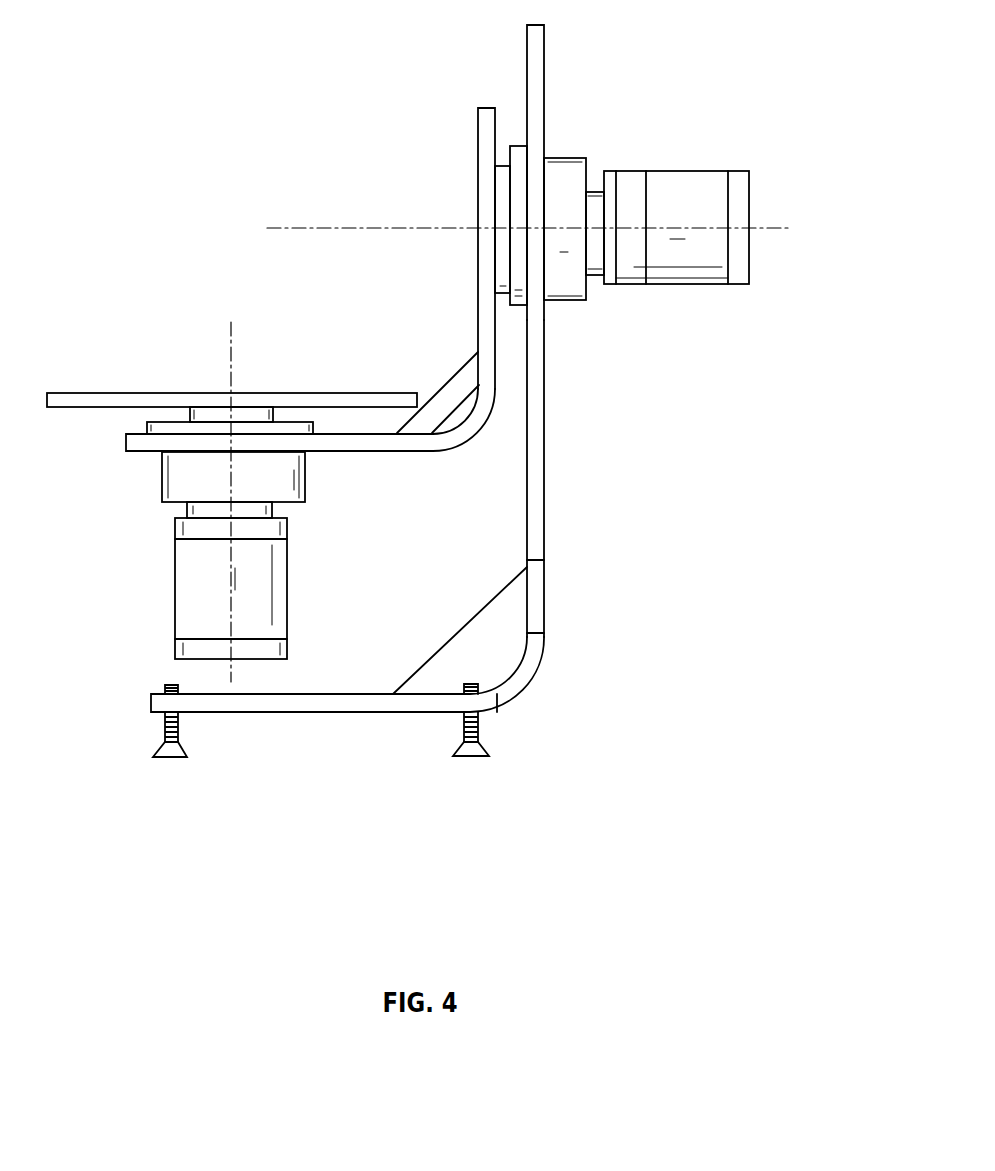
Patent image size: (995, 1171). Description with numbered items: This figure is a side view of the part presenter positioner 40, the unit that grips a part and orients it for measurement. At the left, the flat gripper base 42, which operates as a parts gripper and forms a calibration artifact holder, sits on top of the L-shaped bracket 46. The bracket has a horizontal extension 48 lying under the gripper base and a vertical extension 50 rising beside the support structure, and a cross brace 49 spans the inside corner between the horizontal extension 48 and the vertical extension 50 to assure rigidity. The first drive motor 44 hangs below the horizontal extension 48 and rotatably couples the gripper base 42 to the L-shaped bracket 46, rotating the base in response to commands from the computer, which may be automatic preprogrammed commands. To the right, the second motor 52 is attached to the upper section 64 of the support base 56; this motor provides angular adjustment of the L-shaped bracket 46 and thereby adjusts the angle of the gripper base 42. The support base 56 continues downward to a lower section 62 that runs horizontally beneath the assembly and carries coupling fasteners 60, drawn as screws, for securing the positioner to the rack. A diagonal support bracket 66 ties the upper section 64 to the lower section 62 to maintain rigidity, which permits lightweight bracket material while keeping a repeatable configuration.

The part presenter positioner 40 is at (305, 165).
The gripper base 42 is at (95, 394).
The first drive motor 44 is at (175, 572).
The L-shaped bracket 46 is at (390, 294).
The horizontal extension 48 is at (342, 450).
The cross brace 49 is at (450, 377).
The vertical extension 50 is at (492, 136).
The second motor 52 is at (717, 170).
The support base 56 is at (544, 528).
The coupling fasteners 60 is at (187, 758).
The lower section 62 is at (298, 713).
The upper section 64 is at (540, 50).
The support brackets 66 is at (482, 627).